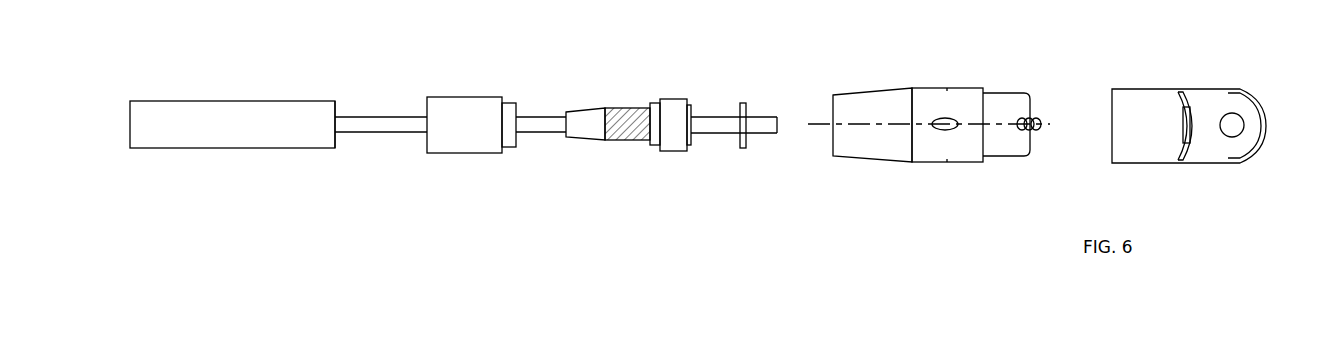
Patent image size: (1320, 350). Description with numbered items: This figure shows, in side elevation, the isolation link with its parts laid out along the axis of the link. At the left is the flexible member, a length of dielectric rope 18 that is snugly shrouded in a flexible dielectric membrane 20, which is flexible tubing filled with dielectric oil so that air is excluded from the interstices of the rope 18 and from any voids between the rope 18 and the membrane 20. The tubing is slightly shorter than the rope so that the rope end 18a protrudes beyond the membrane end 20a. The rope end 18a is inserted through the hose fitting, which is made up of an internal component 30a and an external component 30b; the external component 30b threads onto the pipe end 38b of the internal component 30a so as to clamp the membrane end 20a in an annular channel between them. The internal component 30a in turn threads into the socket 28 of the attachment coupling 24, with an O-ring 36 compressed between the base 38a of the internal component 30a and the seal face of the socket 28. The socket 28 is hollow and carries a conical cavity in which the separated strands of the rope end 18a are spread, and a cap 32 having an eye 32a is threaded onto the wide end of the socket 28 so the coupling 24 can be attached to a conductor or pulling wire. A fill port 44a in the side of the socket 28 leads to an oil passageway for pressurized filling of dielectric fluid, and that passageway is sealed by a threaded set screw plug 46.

The dielectric rope 18 is at (387, 135).
The rope end 18a is at (762, 113).
The dielectric membrane 20 is at (157, 100).
The membrane end 20a is at (318, 101).
The attachment coupling 24 is at (890, 162).
The socket 28 is at (985, 162).
The internal component of hose fitting 30a is at (607, 100).
The external component of hose fitting 30b is at (452, 93).
The cap 32 is at (1143, 85).
The eye 32a is at (1234, 118).
The O-ring 36 is at (741, 152).
The base of internal component 38a is at (689, 112).
The pipe end 38b is at (615, 142).
The fill port 44a is at (950, 118).
The threaded set screw plug 46 is at (1035, 118).